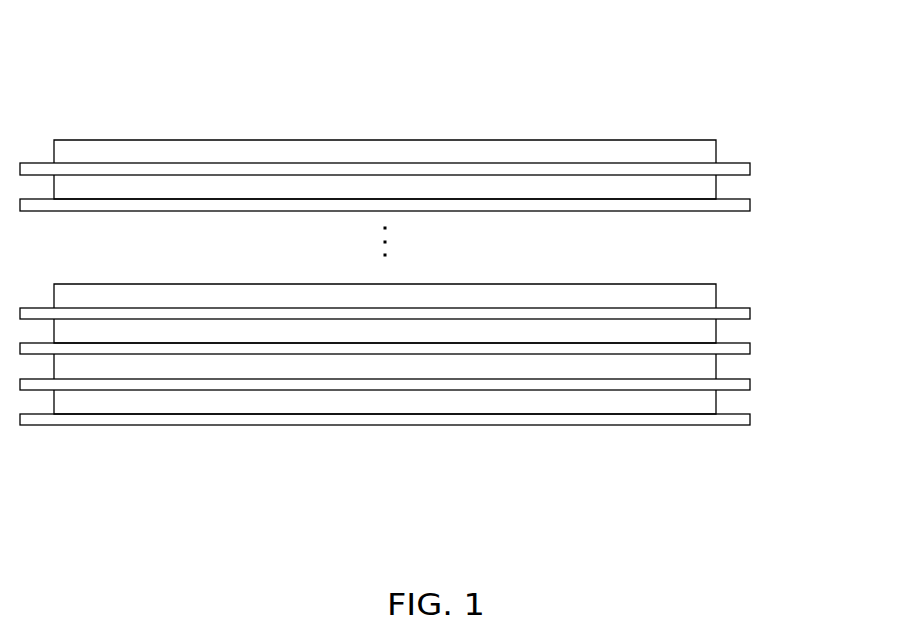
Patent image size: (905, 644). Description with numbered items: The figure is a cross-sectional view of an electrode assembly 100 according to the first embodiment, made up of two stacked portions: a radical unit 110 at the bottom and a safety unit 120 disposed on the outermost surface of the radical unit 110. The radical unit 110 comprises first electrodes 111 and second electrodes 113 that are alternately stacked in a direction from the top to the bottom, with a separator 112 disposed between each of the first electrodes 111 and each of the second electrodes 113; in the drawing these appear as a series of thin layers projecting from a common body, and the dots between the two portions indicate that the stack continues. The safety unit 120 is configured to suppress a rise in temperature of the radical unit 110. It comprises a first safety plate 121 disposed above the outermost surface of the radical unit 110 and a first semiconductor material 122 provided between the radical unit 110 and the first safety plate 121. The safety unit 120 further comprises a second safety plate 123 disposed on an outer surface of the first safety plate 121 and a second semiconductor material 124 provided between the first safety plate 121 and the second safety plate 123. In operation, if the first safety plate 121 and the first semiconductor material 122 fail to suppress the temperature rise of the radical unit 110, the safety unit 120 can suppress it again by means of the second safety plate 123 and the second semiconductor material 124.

The electrode assembly 100 is at (412, 82).
The radical unit 110 is at (833, 263).
The first electrode 111 is at (710, 298).
The separator 112 is at (745, 314).
The second electrode 113 is at (710, 329).
The safety unit 120 is at (833, 120).
The first safety plate 121 is at (710, 187).
The first semiconductor material 122 is at (745, 205).
The second safety plate 123 is at (710, 156).
The second semiconductor material 124 is at (745, 170).